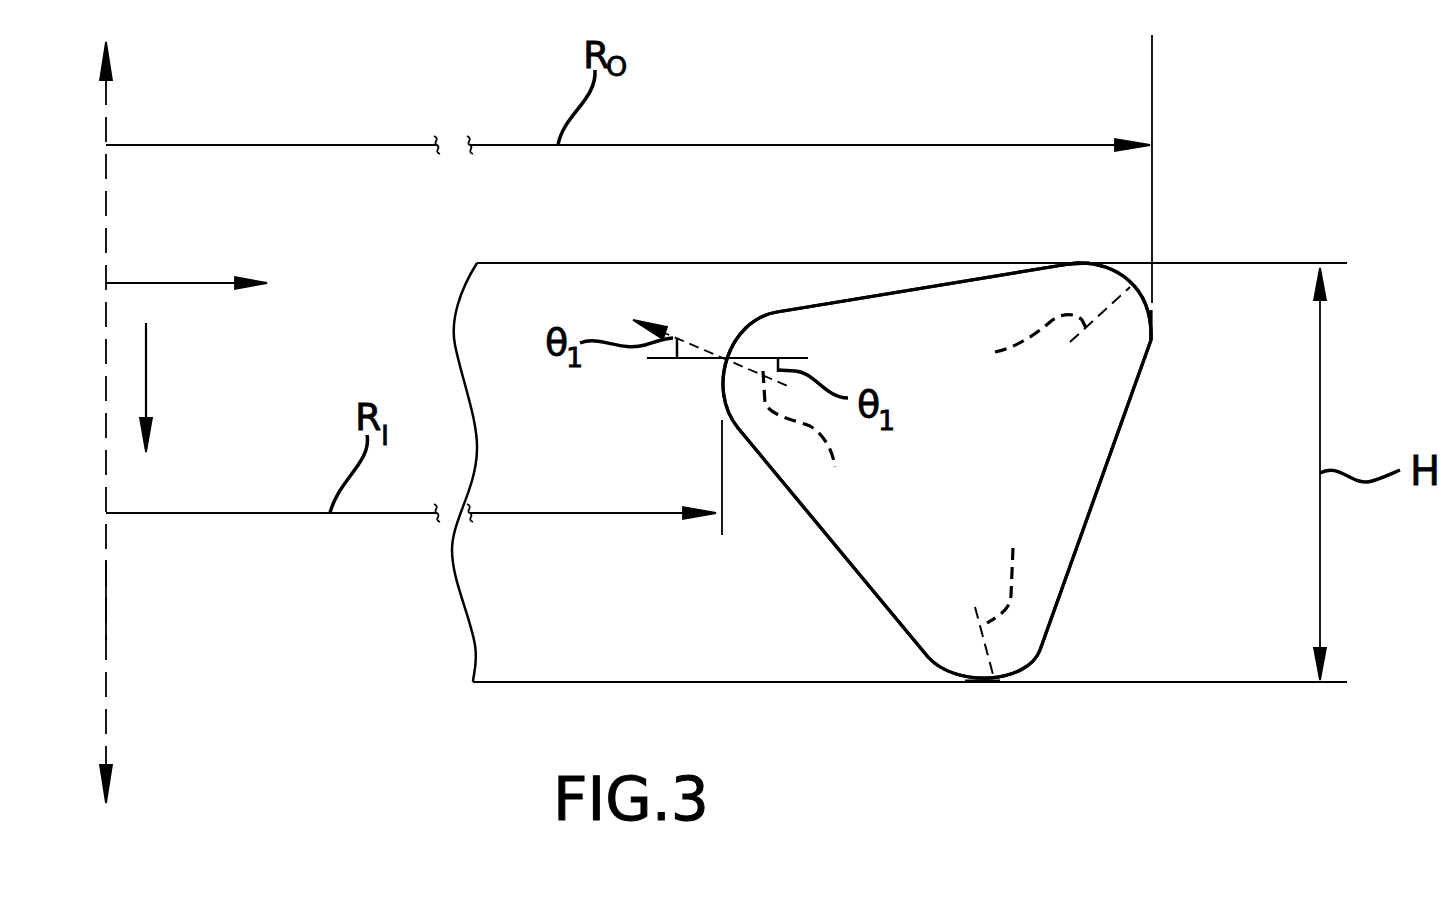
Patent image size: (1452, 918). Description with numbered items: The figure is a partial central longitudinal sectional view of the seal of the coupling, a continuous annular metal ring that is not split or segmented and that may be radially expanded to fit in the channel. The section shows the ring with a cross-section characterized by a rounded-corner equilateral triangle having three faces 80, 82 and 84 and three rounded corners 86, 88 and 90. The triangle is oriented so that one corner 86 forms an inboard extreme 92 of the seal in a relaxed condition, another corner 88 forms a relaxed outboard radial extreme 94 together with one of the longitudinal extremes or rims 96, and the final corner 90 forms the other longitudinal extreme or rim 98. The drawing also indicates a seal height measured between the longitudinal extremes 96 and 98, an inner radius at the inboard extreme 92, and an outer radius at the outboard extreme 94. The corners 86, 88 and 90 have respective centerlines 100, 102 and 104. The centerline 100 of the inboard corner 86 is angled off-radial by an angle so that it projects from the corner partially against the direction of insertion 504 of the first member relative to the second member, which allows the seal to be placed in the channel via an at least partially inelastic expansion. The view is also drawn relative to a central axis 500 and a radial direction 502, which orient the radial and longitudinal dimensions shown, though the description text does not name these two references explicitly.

The face 80 is at (775, 560).
The face 82 is at (878, 296).
The face 84 is at (1062, 596).
The rounded corner 86 is at (750, 323).
The rounded corner 88 is at (1107, 263).
The rounded corner 90 is at (1040, 658).
The inboard extreme 92 is at (723, 404).
The outboard radial extreme 94 is at (1153, 322).
The longitudinal extreme or rim 96 is at (1077, 264).
The longitudinal extreme or rim 98 is at (982, 683).
The centerline 100 is at (822, 442).
The centerline 102 is at (1033, 333).
The centerline 104 is at (1011, 594).
The central axis 500 is at (106, 603).
The radial direction 502 is at (173, 283).
The direction of insertion 504 is at (146, 377).